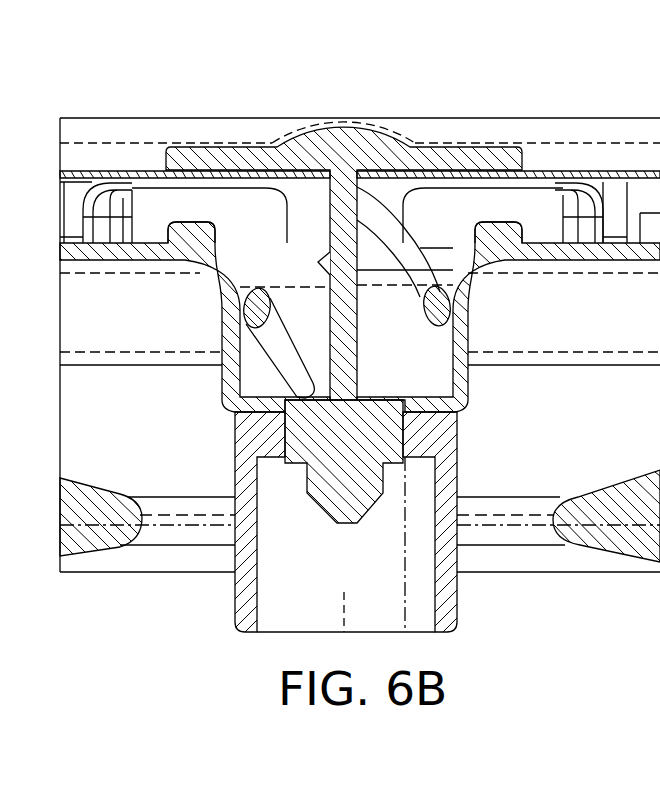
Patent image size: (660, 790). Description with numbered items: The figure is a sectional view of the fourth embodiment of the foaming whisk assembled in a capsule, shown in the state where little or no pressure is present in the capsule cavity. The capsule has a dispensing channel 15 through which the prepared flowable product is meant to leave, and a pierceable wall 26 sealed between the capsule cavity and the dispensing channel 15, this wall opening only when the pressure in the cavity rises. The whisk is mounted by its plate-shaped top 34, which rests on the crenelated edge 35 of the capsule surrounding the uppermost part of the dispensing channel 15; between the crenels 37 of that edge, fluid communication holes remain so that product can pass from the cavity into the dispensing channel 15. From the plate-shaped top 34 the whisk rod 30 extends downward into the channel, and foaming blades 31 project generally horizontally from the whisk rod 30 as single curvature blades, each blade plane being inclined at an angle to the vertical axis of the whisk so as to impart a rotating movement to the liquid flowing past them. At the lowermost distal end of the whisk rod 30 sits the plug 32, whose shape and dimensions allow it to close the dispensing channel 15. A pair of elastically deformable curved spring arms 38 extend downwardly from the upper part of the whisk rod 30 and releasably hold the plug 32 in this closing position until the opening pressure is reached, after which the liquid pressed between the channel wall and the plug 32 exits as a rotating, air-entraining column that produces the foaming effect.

The dispensing channel 15 is at (361, 590).
The pierceable wall 26 is at (155, 141).
The whisk rod 30 is at (346, 322).
The foaming blades 31 is at (322, 270).
The plug 32 is at (361, 467).
The plate-shaped top 34 is at (327, 146).
The crenelated edge 35 is at (183, 266).
The crenels 37 is at (493, 232).
The spring arms 38 is at (265, 350).